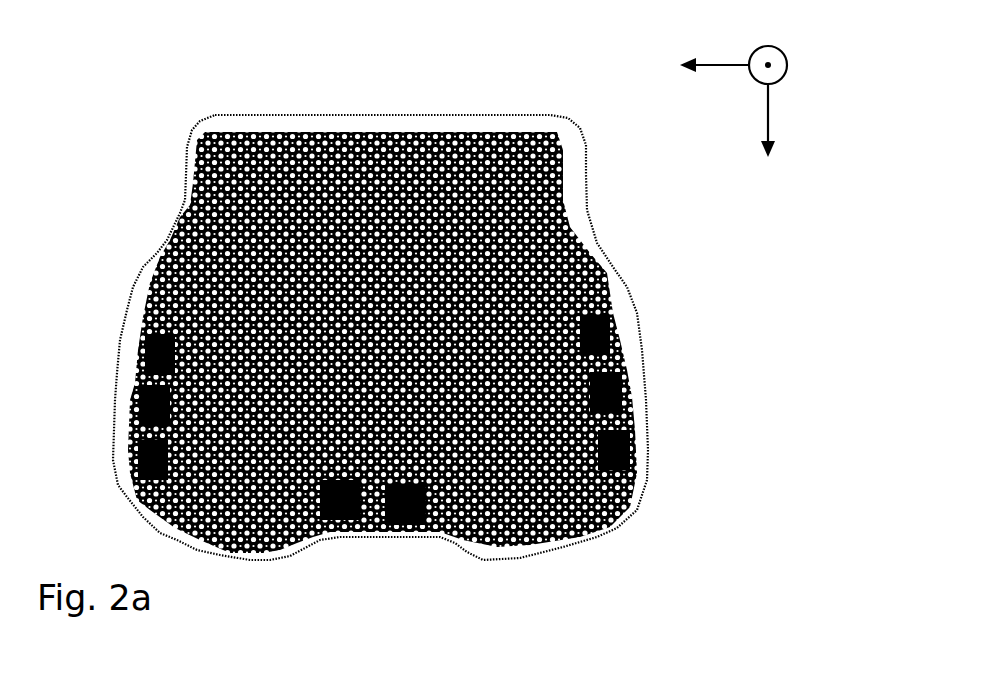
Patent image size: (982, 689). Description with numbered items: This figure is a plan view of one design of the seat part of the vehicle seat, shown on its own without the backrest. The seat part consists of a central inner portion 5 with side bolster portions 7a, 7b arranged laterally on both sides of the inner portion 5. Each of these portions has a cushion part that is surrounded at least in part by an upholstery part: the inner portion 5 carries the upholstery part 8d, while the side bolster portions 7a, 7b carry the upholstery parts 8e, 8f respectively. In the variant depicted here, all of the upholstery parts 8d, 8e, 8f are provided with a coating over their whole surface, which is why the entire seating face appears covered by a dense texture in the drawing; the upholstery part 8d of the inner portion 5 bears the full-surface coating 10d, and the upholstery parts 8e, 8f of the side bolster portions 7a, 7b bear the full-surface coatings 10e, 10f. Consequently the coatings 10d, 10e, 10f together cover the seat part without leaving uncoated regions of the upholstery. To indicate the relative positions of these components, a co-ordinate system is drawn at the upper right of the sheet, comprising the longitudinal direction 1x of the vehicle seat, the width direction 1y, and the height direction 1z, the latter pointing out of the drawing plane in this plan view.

The inner portion 5 is at (378, 140).
The side bolster portion 7a is at (152, 358).
The side bolster portion 7b is at (592, 333).
The upholstery part 8d is at (340, 500).
The upholstery part 8e is at (148, 462).
The upholstery part 8f is at (610, 448).
The full-surface coating 10d is at (405, 505).
The full-surface coating 10e is at (150, 405).
The full-surface coating 10f is at (600, 392).
The longitudinal direction 1x is at (770, 118).
The width direction 1y is at (720, 64).
The height direction 1z is at (790, 63).